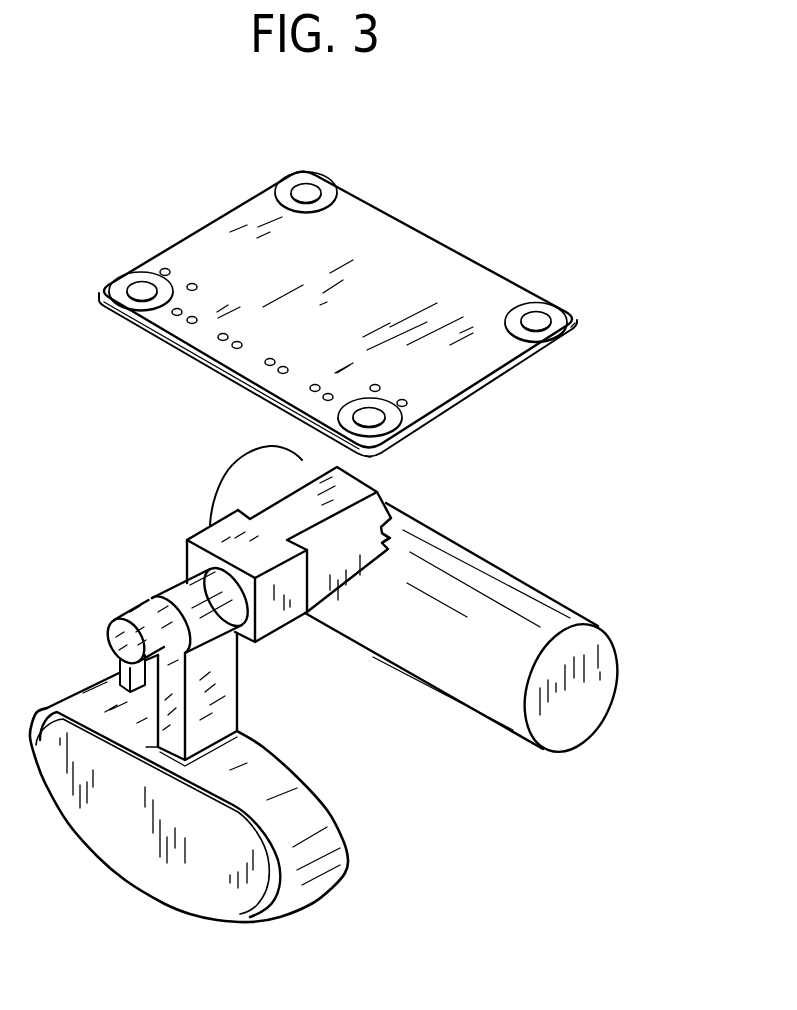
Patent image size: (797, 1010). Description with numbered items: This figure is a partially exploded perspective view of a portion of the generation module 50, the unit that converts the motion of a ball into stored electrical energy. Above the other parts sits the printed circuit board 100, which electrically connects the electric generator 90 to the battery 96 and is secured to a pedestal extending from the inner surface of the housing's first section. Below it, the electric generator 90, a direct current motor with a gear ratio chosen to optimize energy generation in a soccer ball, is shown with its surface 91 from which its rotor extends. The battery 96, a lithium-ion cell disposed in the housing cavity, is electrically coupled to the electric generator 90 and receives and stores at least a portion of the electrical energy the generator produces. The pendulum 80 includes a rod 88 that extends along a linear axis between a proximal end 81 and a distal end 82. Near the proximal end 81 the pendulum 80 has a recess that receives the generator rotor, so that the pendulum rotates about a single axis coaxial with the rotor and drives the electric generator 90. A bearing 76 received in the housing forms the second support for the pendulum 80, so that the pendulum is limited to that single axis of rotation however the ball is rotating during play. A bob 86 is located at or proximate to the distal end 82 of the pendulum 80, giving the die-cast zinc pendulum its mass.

The printed circuit board 100 is at (448, 287).
The generation module 50 is at (603, 393).
The battery 96 is at (482, 585).
The electric generator 90 is at (278, 615).
The surface of the electric generator 91 is at (195, 558).
The proximal end 81 is at (183, 595).
The pendulum 80 is at (150, 607).
The bearing 76 is at (105, 653).
The rod 88 is at (237, 693).
The distal end 82 is at (163, 872).
The bob 86 is at (233, 897).